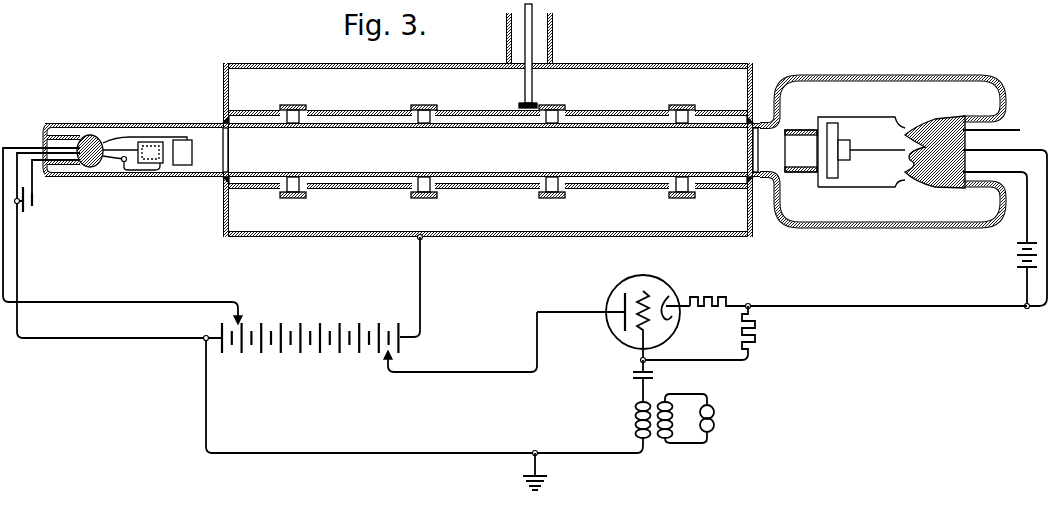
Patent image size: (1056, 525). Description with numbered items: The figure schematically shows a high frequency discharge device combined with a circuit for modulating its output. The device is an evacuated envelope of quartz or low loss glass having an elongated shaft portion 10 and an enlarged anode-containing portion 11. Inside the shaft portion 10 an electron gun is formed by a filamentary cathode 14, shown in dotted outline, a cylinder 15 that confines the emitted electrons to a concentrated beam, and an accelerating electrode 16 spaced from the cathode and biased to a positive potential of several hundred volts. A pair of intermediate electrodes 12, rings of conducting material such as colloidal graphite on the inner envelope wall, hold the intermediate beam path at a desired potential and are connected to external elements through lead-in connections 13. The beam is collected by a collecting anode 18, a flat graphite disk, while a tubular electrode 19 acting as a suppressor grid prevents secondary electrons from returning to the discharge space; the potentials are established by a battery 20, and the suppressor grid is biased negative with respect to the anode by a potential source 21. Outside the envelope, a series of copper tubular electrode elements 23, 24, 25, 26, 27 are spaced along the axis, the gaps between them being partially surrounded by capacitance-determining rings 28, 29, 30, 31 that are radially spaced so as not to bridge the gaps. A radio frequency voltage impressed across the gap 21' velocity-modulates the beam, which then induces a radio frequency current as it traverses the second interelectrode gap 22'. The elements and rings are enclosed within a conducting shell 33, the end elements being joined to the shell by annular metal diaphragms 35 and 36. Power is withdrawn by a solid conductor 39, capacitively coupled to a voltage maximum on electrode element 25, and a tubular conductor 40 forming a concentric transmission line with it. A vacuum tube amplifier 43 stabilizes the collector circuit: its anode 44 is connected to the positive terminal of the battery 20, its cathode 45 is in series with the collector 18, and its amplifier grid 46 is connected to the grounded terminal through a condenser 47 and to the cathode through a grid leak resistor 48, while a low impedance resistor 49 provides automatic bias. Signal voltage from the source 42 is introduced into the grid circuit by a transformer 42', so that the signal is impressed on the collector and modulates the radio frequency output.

The shaft portion 10 is at (112, 178).
The anode-containing portion 11 is at (860, 75).
The intermediate electrodes 12 is at (229, 148).
The lead-in connections 13 is at (219, 182).
The filamentary cathode 14 is at (163, 168).
The cylinder 15 is at (157, 142).
The accelerating electrode 16 is at (189, 140).
The collecting anode 18 is at (839, 128).
The tubular electrode 19 is at (796, 128).
The battery 20 is at (305, 323).
The potential source 21 is at (1010, 276).
The gap 21' is at (316, 196).
The second interelectrode gap 22' is at (449, 194).
The tubular electrode element 23 is at (246, 112).
The tubular electrode element 24 is at (341, 112).
The tubular electrode element 25 is at (461, 112).
The tubular electrode element 26 is at (592, 112).
The tubular electrode element 27 is at (726, 113).
The capacitance-determining ring 28 is at (292, 199).
The capacitance-determining ring 29 is at (424, 199).
The capacitance-determining ring 30 is at (552, 199).
The capacitance-determining ring 31 is at (681, 198).
The conducting shell 33 is at (275, 63).
The annular metal diaphragm 35 is at (223, 82).
The annular metal diaphragm 36 is at (754, 90).
The solid conductor 39 is at (533, 86).
The tubular conductor 40 is at (553, 48).
The source 42 is at (708, 418).
The transformer 42' is at (662, 436).
The vacuum tube amplifier 43 is at (614, 332).
The anode 44 is at (620, 300).
The cathode 45 is at (670, 296).
The amplifier grid 46 is at (661, 322).
The condenser 47 is at (654, 376).
The grid leak resistor 48 is at (755, 331).
The low impedance resistor 49 is at (707, 297).